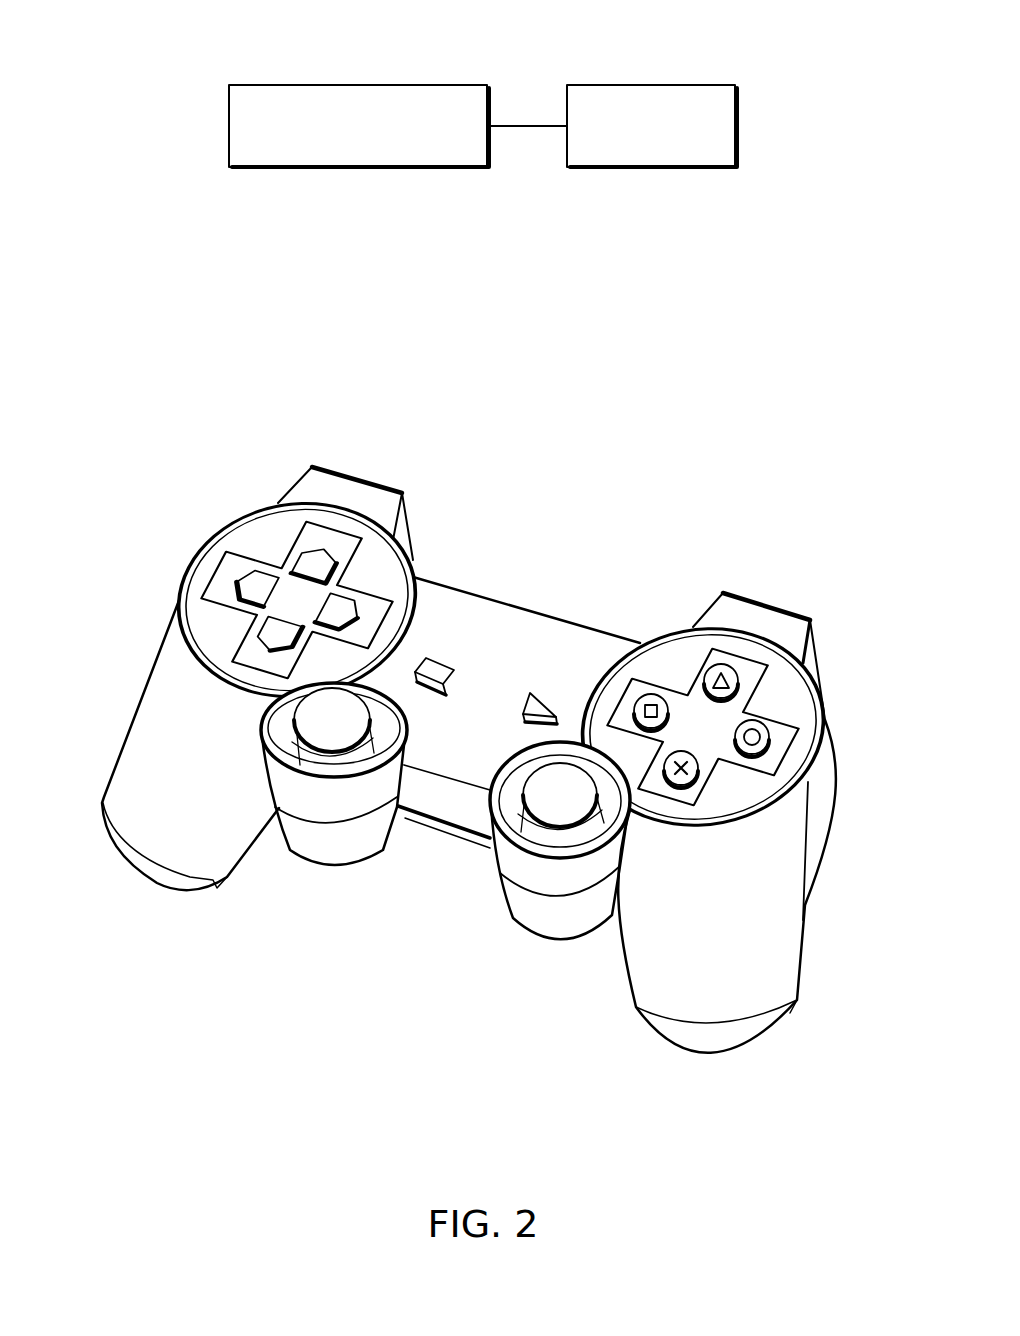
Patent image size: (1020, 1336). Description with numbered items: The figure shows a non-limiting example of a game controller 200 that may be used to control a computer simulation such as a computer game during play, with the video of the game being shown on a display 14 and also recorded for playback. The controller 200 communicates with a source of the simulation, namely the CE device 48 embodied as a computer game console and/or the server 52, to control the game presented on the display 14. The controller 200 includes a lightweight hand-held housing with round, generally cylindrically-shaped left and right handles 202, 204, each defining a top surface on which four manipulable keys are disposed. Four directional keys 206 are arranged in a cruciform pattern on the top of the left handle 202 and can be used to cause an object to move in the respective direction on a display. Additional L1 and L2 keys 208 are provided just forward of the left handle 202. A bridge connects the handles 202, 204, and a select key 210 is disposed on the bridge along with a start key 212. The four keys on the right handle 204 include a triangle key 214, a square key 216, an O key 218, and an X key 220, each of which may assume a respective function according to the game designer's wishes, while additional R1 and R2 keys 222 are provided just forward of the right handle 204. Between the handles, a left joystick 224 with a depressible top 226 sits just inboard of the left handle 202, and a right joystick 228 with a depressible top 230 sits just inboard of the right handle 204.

The display 14 is at (652, 85).
The CE device 48 is at (359, 98).
The server 52 is at (357, 85).
The controller 200 is at (148, 328).
The left handle 202 is at (143, 817).
The right handle 204 is at (722, 992).
The directional keys 206 is at (227, 577).
The L1 and L2 keys 208 is at (328, 470).
The select key 210 is at (430, 668).
The start key 212 is at (543, 698).
The triangle key 214 is at (737, 670).
The square key 216 is at (670, 725).
The O key 218 is at (762, 755).
The X key 220 is at (672, 783).
The R1 and R2 keys 222 is at (737, 612).
The left joystick 224 is at (218, 831).
The depressible top 226 is at (315, 733).
The right joystick 228 is at (514, 880).
The depressible top 230 is at (558, 813).